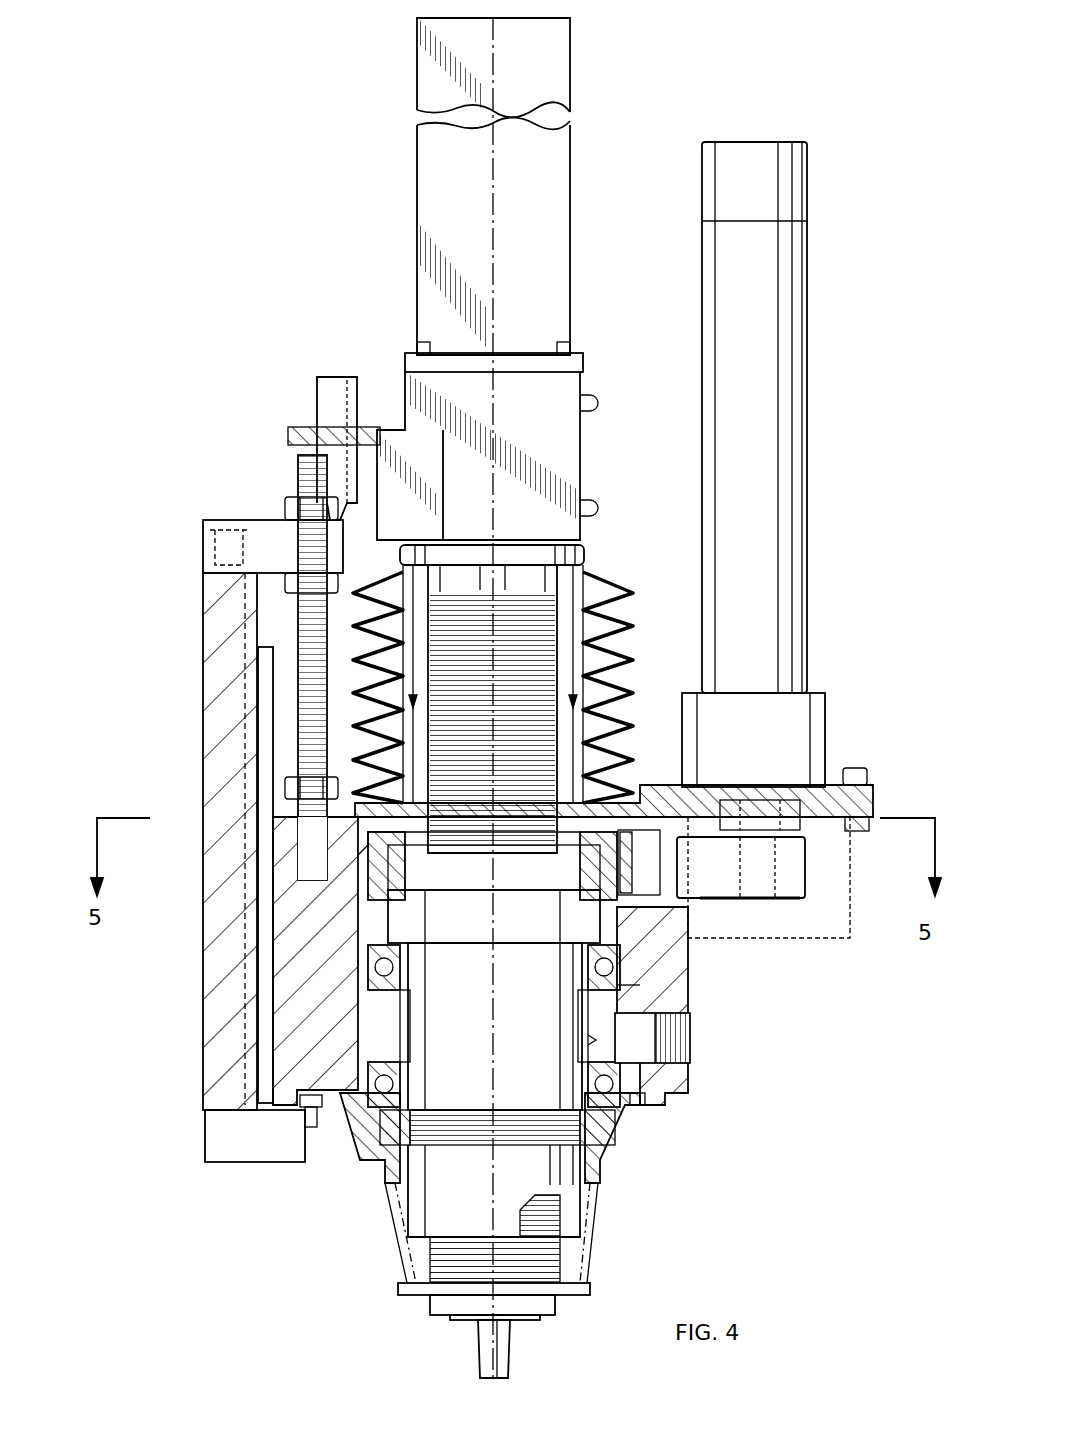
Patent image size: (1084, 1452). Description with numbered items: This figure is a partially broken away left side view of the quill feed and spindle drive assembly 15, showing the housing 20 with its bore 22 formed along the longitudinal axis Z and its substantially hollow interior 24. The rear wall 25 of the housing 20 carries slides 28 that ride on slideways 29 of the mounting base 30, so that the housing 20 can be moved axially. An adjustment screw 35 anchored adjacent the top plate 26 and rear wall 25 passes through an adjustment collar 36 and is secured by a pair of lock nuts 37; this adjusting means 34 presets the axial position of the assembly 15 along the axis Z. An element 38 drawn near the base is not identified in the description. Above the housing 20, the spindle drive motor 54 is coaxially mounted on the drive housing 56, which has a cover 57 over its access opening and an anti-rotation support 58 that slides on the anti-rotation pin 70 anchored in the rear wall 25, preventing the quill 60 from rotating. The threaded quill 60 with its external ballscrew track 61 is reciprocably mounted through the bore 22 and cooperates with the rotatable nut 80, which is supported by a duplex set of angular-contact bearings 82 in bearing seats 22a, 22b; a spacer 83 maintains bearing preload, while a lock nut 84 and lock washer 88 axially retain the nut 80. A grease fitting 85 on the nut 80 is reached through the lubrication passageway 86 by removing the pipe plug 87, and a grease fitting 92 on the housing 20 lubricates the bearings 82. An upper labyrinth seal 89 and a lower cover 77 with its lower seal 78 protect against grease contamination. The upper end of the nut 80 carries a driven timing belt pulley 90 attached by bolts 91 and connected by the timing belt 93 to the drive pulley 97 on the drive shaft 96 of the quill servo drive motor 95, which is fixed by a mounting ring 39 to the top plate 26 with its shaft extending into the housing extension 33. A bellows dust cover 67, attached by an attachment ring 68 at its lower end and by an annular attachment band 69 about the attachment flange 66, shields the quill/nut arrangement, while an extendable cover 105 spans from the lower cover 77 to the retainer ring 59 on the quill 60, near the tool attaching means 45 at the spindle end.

The longitudinal axis Z is at (493, 45).
The spindle drive motor 54 is at (493, 240).
The drive housing 56 is at (480, 446).
The cover 57 is at (598, 432).
The anti-rotation pin 70 is at (330, 378).
The anti-rotation support 58 is at (295, 428).
The quill feed and spindle drive assembly 15 is at (297, 362).
The annular attachment band 69 is at (590, 556).
The attachment flange 66 is at (545, 540).
The external ballscrew track 61 is at (555, 590).
The dust cover 67 is at (620, 590).
The top plate 26 is at (665, 790).
The mounting ring 39 is at (850, 772).
The quill servo drive motor 95 is at (753, 464).
The drive shaft 96 is at (750, 790).
The timing belt 93 is at (741, 867).
The drive pulley 97 is at (775, 900).
The housing extension 33 is at (855, 868).
The bolts 91 is at (615, 870).
The means for selectively adjusting axial position 34 is at (222, 515).
The lock nuts 37 is at (300, 545).
The adjustment collar 36 is at (315, 547).
The adjustment screw 35 is at (298, 612).
The mounting base 30 is at (220, 1005).
The slides 28 is at (248, 920).
The slideways 29 is at (262, 720).
The rear wall 25 is at (300, 960).
The hollow interior 24 is at (350, 905).
The base block 38 is at (250, 1135).
The grease fitting 92 is at (312, 1130).
The lock washer 88 is at (372, 1150).
The lower cover 77 is at (620, 1165).
The attachment ring 68 is at (410, 850).
The driven timing belt pulley 90 is at (392, 880).
The upper labyrinth seal 89 is at (590, 935).
The angular-contact bearings 82 is at (400, 970).
The rotatable nut 80 is at (390, 1025).
The spacer 83 is at (545, 1025).
The grease fitting 85 is at (585, 1042).
The bore 22 is at (580, 1005).
The bearing seat 22a is at (620, 985).
The bearing seat 22b is at (625, 1105).
The lubrication passageway 86 is at (648, 1057).
The pipe plug 87 is at (690, 1020).
The housing 20 is at (724, 1010).
The lock nut 84 is at (410, 1150).
The lower seal 78 is at (565, 1178).
The extendable cover 105 is at (600, 1222).
The quill 60 is at (575, 1262).
The retainer ring 59 is at (580, 1292).
The means for attaching a tool 45 is at (505, 1345).